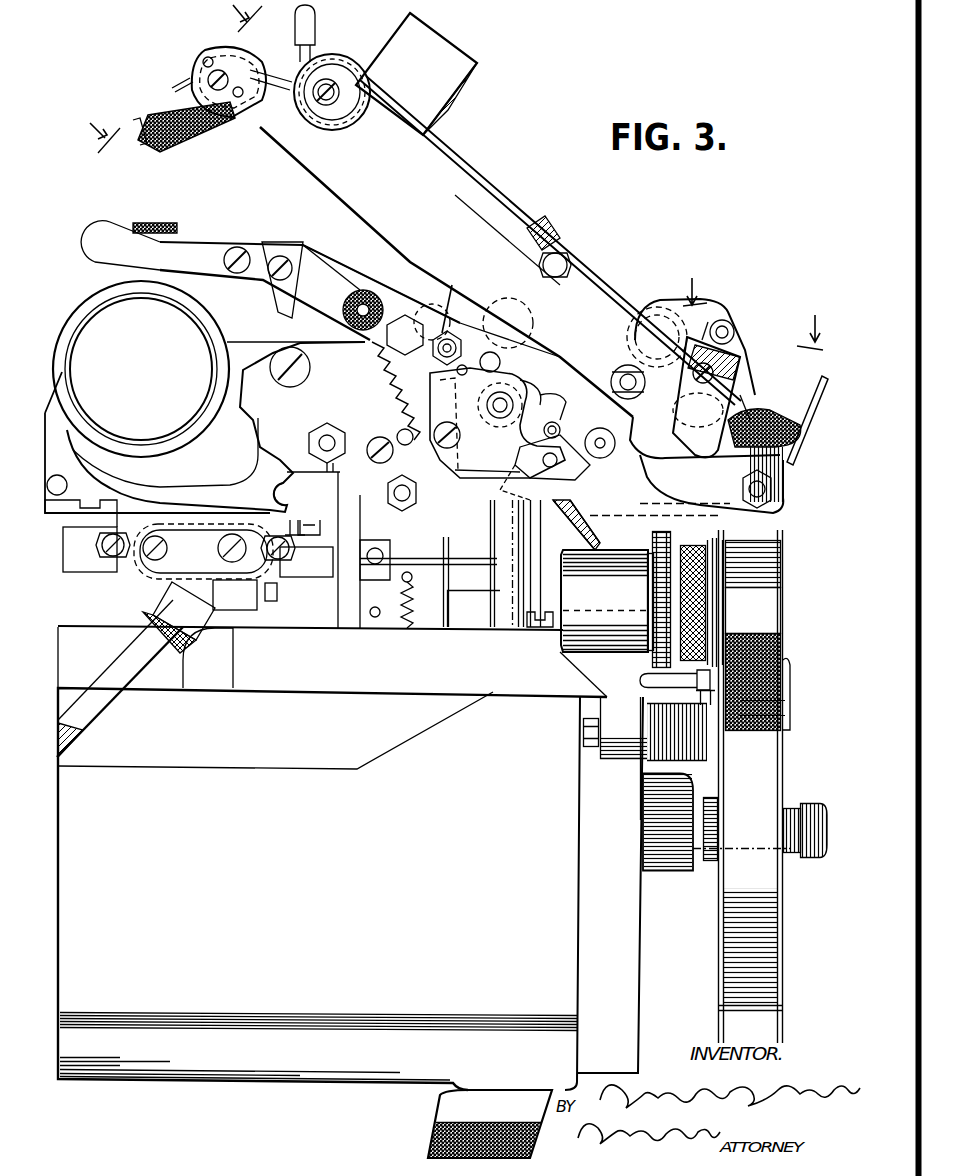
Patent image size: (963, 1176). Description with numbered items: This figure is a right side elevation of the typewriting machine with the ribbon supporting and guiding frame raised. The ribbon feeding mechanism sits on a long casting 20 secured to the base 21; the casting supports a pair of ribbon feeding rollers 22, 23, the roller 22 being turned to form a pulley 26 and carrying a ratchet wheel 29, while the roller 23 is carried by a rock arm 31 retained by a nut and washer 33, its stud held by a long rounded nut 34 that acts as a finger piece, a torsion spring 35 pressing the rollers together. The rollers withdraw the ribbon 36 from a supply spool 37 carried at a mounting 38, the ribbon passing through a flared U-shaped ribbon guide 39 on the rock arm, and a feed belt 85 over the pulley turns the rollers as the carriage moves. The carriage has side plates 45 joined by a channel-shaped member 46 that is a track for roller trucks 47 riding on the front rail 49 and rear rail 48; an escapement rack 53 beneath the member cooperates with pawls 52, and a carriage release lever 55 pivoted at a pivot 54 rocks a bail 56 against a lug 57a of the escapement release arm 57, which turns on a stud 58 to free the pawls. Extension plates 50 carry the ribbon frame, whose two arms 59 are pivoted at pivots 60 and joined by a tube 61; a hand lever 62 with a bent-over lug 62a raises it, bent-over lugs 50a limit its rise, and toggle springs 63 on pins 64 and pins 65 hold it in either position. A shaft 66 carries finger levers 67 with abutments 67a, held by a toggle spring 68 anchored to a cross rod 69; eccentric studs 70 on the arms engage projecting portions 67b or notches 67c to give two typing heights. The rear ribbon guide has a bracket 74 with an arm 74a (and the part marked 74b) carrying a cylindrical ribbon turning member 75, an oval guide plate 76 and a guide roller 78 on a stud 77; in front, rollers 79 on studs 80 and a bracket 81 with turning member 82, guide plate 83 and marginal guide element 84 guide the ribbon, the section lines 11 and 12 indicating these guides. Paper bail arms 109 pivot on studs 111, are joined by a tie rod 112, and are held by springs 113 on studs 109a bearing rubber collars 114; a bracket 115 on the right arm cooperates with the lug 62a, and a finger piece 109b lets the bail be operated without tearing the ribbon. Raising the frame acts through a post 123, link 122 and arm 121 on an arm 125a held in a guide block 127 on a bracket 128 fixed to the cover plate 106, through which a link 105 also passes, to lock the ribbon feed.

The section line 11- 11 is at (181, 82).
The section line 12- 12 is at (752, 325).
The casting 20 is at (650, 788).
The base 21 is at (235, 1072).
The ribbon feeding roller 22 is at (784, 560).
The ribbon feeding roller 23 is at (772, 662).
The pulley 26 is at (714, 540).
The ratchet wheel 29 is at (660, 531).
The rock arm 31 is at (715, 728).
The nut and washer 33 is at (583, 733).
The nut 34 is at (643, 680).
The torsion spring 35 is at (705, 750).
The ribbon 36 is at (183, 140).
The ribbon supply spool 37 is at (718, 1008).
The spool mounting 38 is at (795, 806).
The ribbon guide 39 is at (780, 695).
The side plates 45 is at (245, 355).
The channel-shaped member 46 is at (255, 530).
The anti-friction roller trucks 47 is at (110, 560).
The rear rail 48 is at (315, 572).
The front rail 49 is at (77, 565).
The extension plates 50 is at (600, 550).
The bent-over lugs 50a is at (551, 238).
The escapement pawls 52 is at (270, 603).
The escapement rack 53 is at (233, 592).
The pivot 54 is at (311, 367).
The carriage release lever 55 is at (135, 250).
The bail 56 is at (289, 492).
The escapement release arm 57 is at (349, 520).
The lug 57a is at (306, 522).
The stud 58 is at (298, 536).
The arms 59 is at (473, 237).
The pivots 60 is at (748, 488).
The tube 61 is at (665, 308).
The hand lever 62 is at (455, 96).
The bent-over lug 62a is at (312, 165).
The toggle springs 63 is at (590, 470).
The pins 64 is at (560, 430).
The pins 65 is at (572, 477).
The shaft 66 is at (508, 398).
The finger levers 67 is at (445, 505).
The abutments 67a is at (558, 400).
The projecting portions 67b is at (530, 380).
The notches 67c is at (520, 428).
The toggle spring 68 is at (452, 299).
The cross rod 69 is at (443, 338).
The eccentric studs 70 is at (567, 263).
The bracket 74 is at (650, 362).
The outer downwardly extending arm 74a is at (748, 356).
The bracket 74b is at (711, 480).
The cylindrical ribbon turning member 75 is at (748, 395).
The guide plate 76 is at (813, 399).
The stud 77 is at (615, 446).
The guide roller 78 is at (620, 370).
The rollers 79 is at (366, 75).
The studs 80 is at (324, 80).
The bracket 81 is at (259, 66).
The cylindrical turning member 82 is at (197, 75).
The guide plate 83 is at (213, 62).
The marginal guide element 84 is at (142, 122).
The feed belt 85 is at (692, 545).
The link 105 is at (433, 567).
The cover plate 106 is at (450, 594).
The paper bail arms 109 is at (200, 253).
The studs 109a is at (350, 316).
The finger piece 109b is at (318, 14).
The studs 111 is at (410, 305).
The tie rod 112 is at (461, 346).
The springs 113 is at (380, 372).
The collars 114 is at (372, 298).
The bracket 115 is at (265, 255).
The arm 121 is at (660, 498).
The link 122 is at (708, 322).
The post 123 is at (732, 320).
The arm 125a is at (612, 552).
The guide block 127 is at (547, 540).
The bracket 128 is at (487, 598).